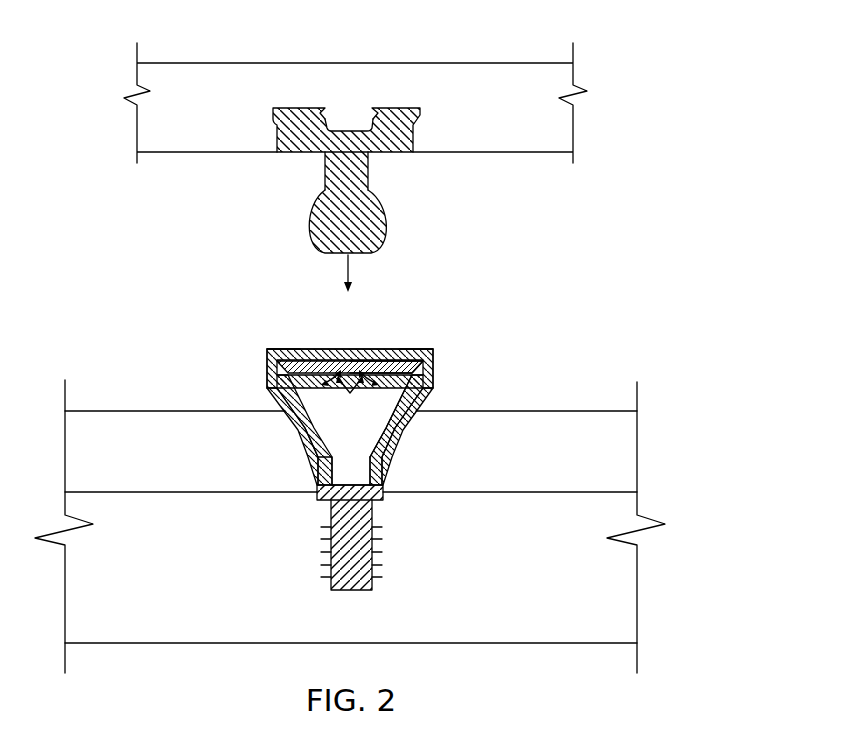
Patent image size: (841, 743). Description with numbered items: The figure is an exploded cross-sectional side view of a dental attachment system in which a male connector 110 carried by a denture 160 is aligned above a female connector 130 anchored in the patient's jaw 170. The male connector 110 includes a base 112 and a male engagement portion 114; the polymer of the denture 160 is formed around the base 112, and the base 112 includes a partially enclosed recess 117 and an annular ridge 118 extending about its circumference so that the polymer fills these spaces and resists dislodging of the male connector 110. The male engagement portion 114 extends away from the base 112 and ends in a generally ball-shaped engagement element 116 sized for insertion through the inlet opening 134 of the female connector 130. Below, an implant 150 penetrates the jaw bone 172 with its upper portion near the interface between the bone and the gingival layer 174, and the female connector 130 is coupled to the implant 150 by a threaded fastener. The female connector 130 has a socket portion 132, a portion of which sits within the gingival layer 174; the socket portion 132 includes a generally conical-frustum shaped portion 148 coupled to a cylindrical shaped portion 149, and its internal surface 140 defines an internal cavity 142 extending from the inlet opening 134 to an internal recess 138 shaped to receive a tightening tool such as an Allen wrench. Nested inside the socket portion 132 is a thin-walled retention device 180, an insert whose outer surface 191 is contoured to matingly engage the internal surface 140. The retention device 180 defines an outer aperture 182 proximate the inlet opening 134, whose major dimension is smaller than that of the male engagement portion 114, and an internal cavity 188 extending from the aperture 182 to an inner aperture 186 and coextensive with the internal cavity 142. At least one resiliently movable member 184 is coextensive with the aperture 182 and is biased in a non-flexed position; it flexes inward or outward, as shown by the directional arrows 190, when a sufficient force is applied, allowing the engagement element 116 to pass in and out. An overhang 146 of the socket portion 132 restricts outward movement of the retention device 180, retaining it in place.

The male connector 110 is at (311, 177).
The base 112 is at (402, 108).
The male engagement portion 114 is at (370, 181).
The engagement element 116 is at (313, 240).
The partially enclosed recess 117 is at (329, 129).
The annular ridge 118 is at (272, 122).
The female connector 130 is at (447, 359).
The socket portion 132 is at (432, 401).
The inlet opening 134 is at (313, 349).
The internal recess 138 is at (318, 462).
The internal surface 140 is at (406, 426).
The internal cavity 142 is at (384, 446).
The overhang 146 is at (286, 348).
The conical-frustum shaped portion 148 is at (312, 483).
The cylindrical shaped portion 149 is at (434, 376).
The implant 150 is at (393, 553).
The denture 160 is at (529, 58).
The jaw 170 is at (583, 404).
The jaw bone 172 is at (608, 590).
The gingival layer 174 is at (610, 448).
The retention device 180 is at (302, 436).
The aperture 182 is at (340, 350).
The resiliently movable member 184 is at (395, 350).
The inner aperture 186 is at (296, 424).
The internal cavity 188 is at (382, 449).
The directional arrows 190 is at (350, 393).
The outer surface 191 is at (392, 432).